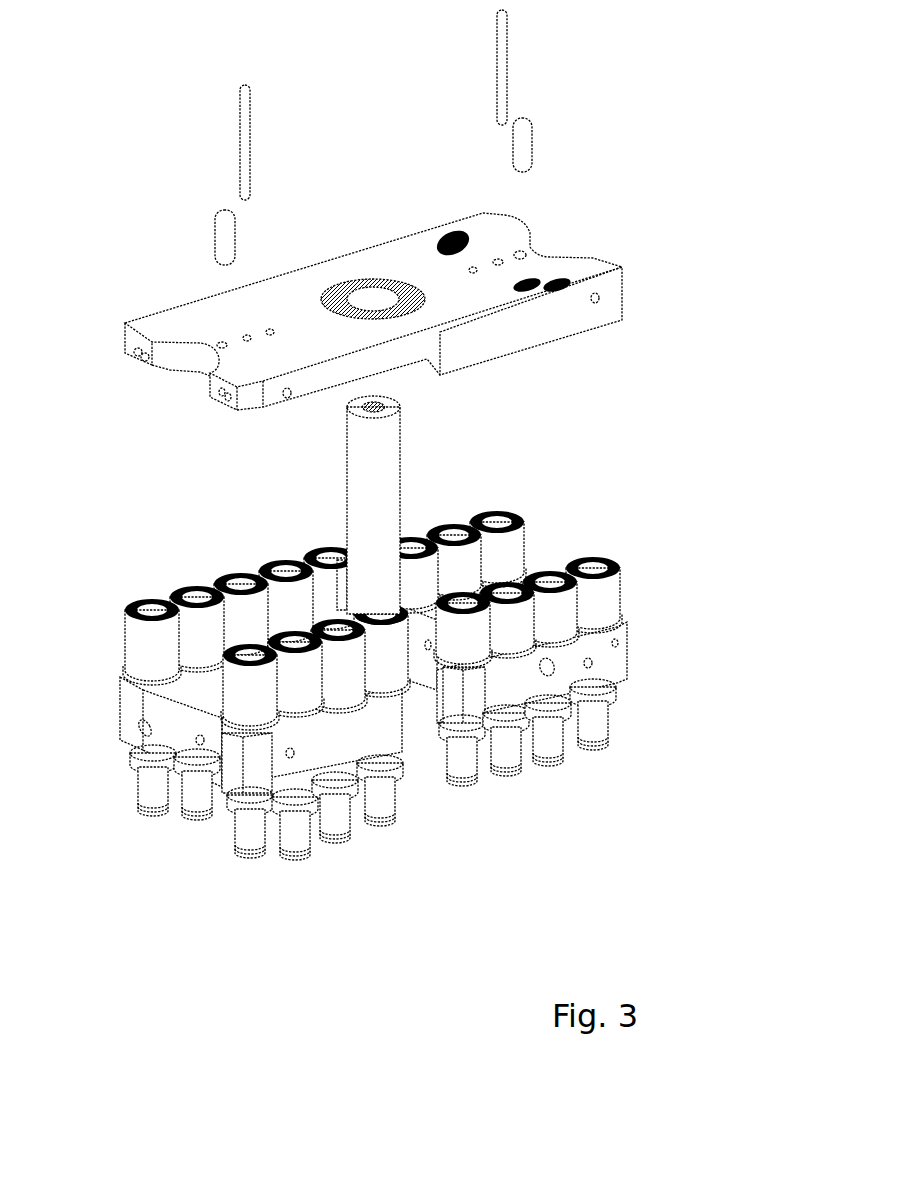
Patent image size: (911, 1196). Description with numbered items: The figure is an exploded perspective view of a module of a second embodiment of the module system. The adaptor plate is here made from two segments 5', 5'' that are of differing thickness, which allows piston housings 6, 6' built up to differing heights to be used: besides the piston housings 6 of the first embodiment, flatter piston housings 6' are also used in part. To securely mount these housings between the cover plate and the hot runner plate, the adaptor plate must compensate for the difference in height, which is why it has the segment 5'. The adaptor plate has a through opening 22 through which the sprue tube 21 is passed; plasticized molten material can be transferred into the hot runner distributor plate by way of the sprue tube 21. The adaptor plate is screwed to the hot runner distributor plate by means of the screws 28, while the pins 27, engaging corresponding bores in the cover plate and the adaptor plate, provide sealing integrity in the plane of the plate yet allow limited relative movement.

The screws 28 is at (507, 62).
The pins 27 is at (532, 144).
The through opening 22 is at (370, 293).
The segment 5' is at (408, 308).
The segment 5'' is at (130, 353).
The sprue tube 21 is at (400, 458).
The flatter piston housings 6' is at (504, 641).
The piston housings 6 is at (214, 703).